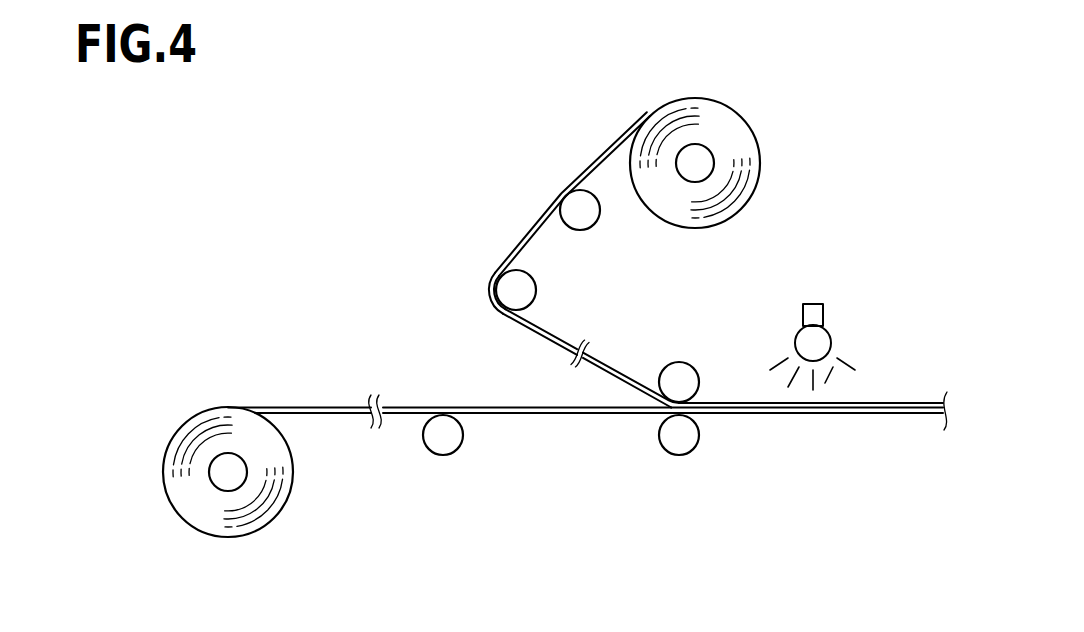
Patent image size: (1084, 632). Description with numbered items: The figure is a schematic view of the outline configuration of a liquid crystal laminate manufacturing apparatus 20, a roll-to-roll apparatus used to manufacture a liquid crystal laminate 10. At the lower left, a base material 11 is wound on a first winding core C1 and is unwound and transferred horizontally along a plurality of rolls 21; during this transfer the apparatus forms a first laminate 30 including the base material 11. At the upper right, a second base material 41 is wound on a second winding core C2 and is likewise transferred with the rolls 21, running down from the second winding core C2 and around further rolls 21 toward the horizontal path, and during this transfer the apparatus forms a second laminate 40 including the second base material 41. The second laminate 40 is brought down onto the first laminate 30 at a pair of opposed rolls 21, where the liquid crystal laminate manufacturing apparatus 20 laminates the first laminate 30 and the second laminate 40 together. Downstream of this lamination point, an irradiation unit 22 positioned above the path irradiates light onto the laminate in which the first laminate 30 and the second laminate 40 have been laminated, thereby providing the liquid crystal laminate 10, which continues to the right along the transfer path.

The liquid crystal laminate manufacturing apparatus 20 is at (332, 167).
The base material 11 is at (221, 538).
The first winding core C1 is at (215, 478).
The first laminate 30 is at (563, 417).
The liquid crystal laminate 10 is at (902, 420).
The second laminate 40 is at (624, 368).
The second base material 41 is at (706, 100).
The second winding core C2 is at (712, 157).
The rolls 21 is at (597, 224).
The irradiation unit 22 is at (824, 312).